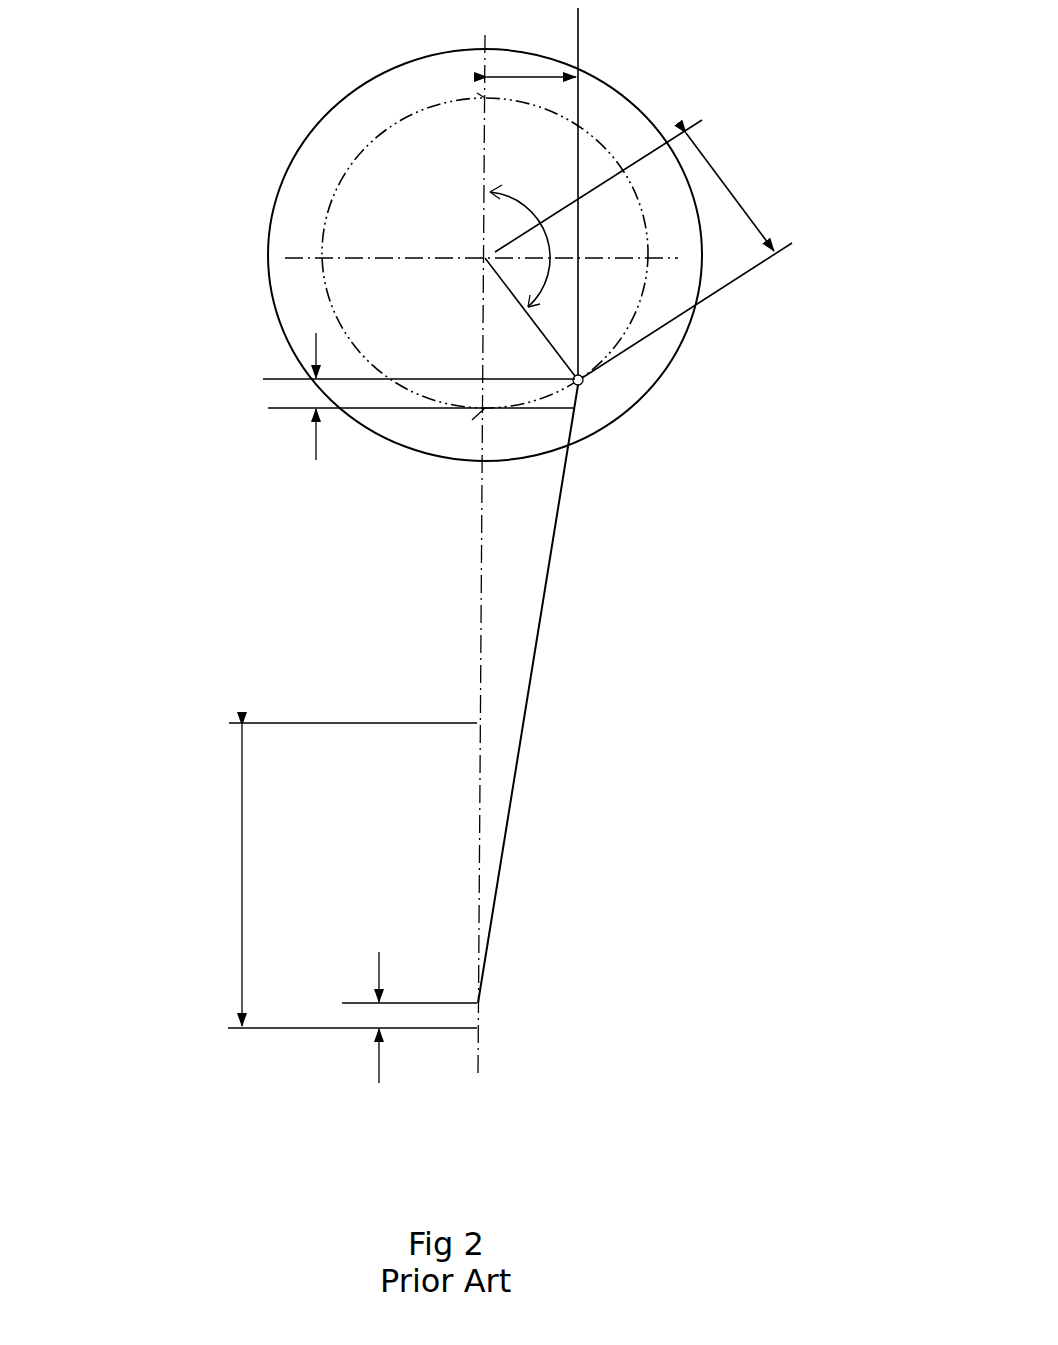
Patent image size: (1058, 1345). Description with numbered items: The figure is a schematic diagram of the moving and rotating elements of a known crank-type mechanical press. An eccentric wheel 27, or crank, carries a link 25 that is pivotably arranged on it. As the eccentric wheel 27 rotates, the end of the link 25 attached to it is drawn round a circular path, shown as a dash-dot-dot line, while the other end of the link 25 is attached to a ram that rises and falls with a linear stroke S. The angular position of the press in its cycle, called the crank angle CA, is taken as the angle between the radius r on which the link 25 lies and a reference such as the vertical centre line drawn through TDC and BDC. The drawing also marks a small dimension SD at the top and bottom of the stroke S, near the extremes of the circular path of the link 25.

The eccentric wheel 27 is at (320, 182).
The link 25 is at (527, 642).
The radius r is at (643, 249).
The crank angle CA is at (498, 215).
The top dead centre TDC is at (477, 93).
The bottom dead centre BDC is at (472, 420).
The stroke S is at (324, 875).
The stroke offset SD is at (419, 708).